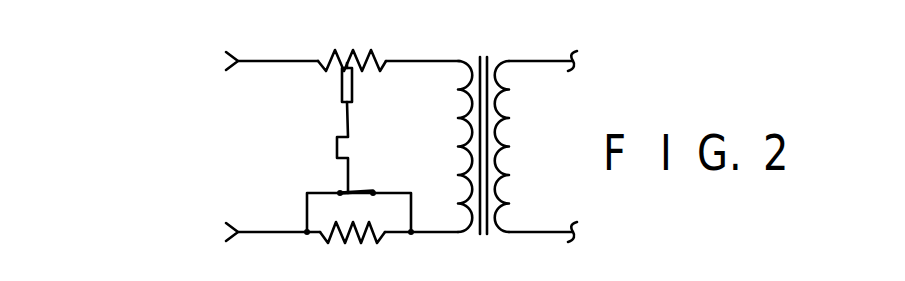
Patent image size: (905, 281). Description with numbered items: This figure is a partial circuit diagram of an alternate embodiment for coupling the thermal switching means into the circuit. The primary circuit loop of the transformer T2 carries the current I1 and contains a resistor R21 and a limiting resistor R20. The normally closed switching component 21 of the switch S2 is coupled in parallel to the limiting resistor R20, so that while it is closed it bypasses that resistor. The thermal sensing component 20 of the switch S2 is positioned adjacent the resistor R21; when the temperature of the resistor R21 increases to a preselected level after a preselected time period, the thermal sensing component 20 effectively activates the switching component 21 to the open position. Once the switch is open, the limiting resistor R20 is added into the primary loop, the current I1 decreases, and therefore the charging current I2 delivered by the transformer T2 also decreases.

The resistor R21 is at (352, 56).
The thermal sensing component 20 is at (354, 90).
The switching component 21 is at (306, 198).
The switch S2 is at (358, 190).
The limiting resistor R20 is at (379, 235).
The transformer T2 is at (477, 54).
The current I1 is at (305, 33).
The charging current I2 is at (605, 30).